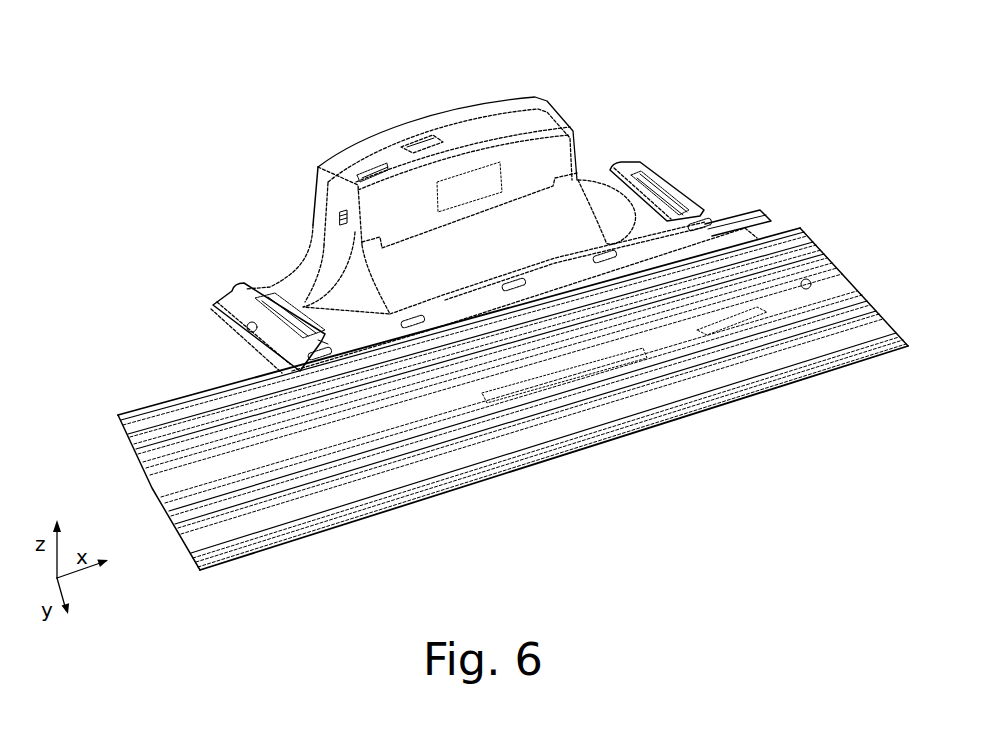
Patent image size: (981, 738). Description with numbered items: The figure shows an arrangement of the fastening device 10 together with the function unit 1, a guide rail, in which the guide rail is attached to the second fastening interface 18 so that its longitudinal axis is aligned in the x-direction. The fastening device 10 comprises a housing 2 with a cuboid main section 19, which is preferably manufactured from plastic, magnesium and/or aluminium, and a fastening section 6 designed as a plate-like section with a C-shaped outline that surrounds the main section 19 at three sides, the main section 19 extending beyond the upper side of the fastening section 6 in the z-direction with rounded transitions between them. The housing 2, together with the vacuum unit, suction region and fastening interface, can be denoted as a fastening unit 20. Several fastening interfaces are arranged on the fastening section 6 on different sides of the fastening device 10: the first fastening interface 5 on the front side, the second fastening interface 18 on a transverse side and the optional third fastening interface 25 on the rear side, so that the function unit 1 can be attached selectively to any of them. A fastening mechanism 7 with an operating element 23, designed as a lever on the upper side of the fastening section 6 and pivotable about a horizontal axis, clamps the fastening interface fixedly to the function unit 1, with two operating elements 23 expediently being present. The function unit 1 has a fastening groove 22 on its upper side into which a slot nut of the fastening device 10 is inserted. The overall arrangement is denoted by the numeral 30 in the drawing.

The function unit 1 is at (474, 399).
The housing 2 is at (451, 139).
The first fastening interface 5 is at (242, 350).
The fastening section 6 is at (643, 240).
The fastening mechanism 7 is at (405, 232).
The fastening device 10 is at (454, 236).
The second fastening interface 18 is at (738, 226).
The main section 19 is at (514, 115).
The fastening unit 20 is at (454, 236).
The fastening groove 22 is at (130, 411).
The operating element 23 is at (405, 232).
The third fastening interface 25 is at (688, 184).
The guide system 30 is at (193, 125).